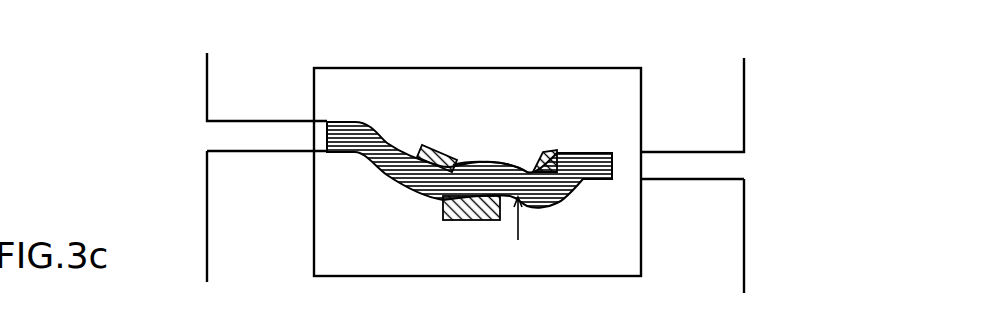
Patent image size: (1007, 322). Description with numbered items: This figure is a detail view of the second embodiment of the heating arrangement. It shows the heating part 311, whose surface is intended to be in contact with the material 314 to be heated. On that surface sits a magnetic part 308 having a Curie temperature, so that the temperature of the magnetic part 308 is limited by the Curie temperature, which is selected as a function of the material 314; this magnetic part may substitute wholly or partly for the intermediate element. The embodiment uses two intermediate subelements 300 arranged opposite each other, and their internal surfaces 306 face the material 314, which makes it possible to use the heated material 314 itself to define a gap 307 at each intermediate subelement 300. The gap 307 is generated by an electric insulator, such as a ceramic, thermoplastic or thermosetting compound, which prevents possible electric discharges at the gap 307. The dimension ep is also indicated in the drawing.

The intermediate subelement 300 is at (707, 72).
The internal surface 306 is at (387, 142).
The gap 307 is at (702, 167).
The magnetic part 308 is at (430, 153).
The heating part 311 is at (358, 96).
The material to be heated 314 is at (492, 170).
The thickness ep is at (530, 219).